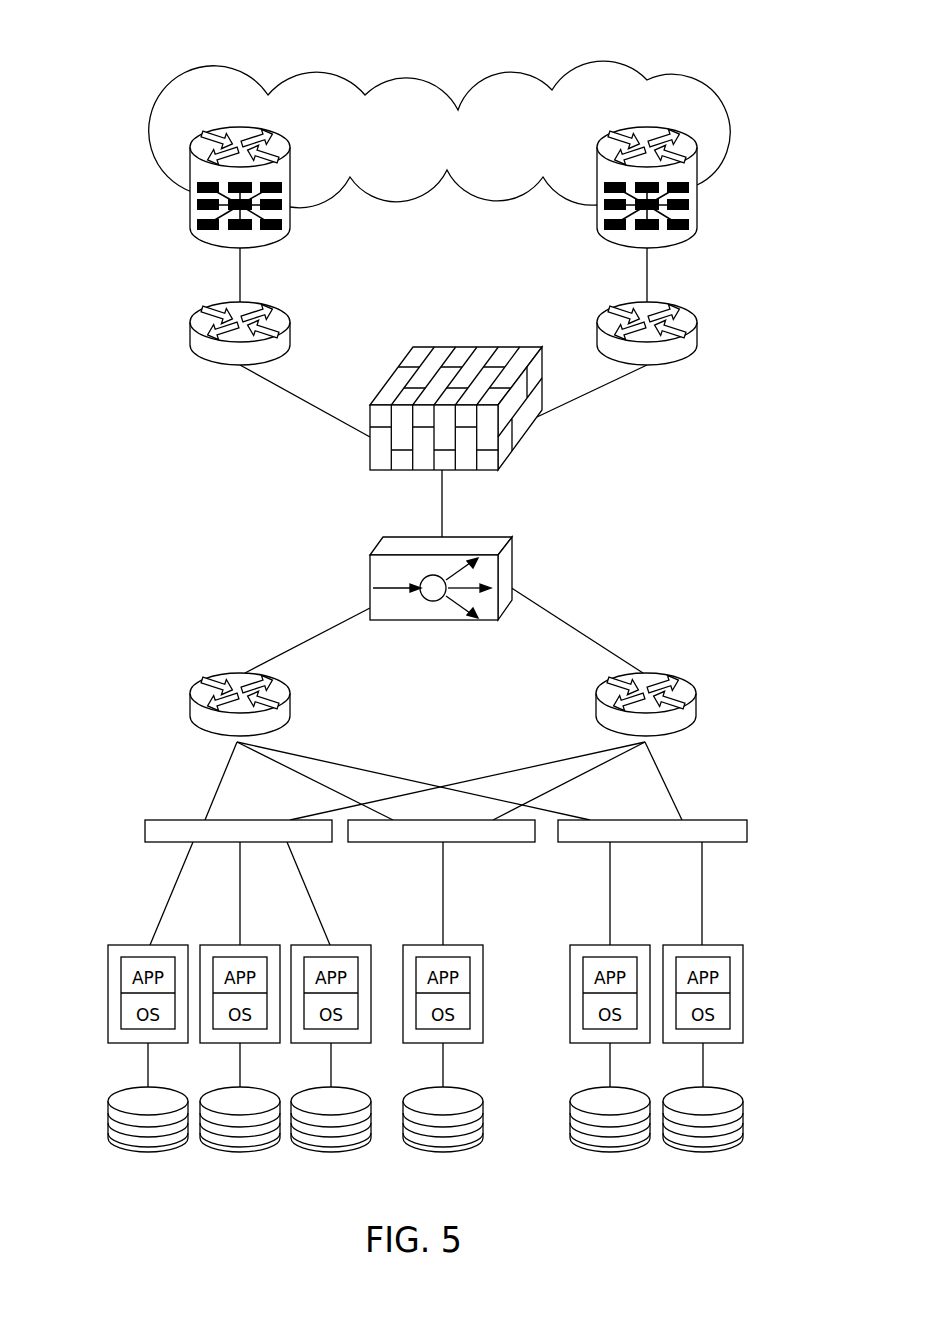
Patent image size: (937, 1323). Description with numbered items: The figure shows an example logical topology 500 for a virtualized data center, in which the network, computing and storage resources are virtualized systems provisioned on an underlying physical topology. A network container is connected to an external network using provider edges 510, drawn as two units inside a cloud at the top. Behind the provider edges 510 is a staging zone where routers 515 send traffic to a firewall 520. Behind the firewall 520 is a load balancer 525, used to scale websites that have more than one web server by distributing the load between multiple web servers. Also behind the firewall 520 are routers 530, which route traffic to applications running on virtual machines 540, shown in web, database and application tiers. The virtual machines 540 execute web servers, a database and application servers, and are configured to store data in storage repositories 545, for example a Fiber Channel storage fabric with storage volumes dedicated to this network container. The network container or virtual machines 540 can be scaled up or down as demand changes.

The logical topology 500 is at (100, 43).
The provider edges 510 is at (742, 201).
The core routers 515 is at (735, 363).
The firewall 520 is at (465, 347).
The load balancer 525 is at (370, 573).
The routers 530 is at (730, 683).
The virtual machines 540 is at (748, 938).
The storage repositories 545 is at (748, 1073).